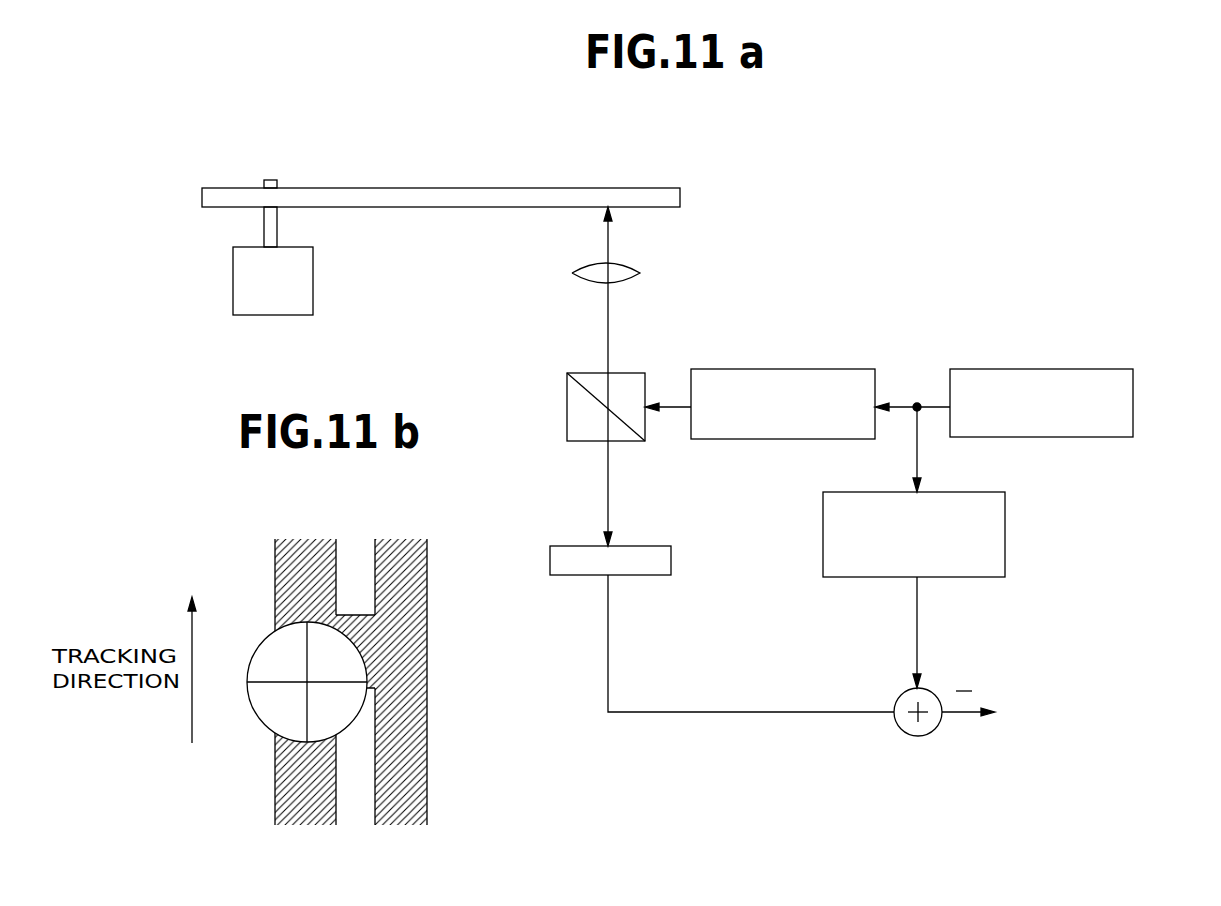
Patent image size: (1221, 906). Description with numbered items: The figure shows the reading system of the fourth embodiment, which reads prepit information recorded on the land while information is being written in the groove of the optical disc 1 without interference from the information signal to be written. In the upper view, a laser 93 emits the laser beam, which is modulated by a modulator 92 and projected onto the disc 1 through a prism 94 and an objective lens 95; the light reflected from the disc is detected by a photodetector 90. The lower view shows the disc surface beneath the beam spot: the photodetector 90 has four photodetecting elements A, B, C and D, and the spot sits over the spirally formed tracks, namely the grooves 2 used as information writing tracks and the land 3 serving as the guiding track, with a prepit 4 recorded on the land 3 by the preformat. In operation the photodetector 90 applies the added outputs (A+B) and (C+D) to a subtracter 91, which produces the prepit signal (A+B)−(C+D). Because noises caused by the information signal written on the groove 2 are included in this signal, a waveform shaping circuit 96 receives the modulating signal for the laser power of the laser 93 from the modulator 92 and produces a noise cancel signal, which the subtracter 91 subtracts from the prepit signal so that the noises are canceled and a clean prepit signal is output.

In FIG. 11a, the optical disc 1 is at (531, 195).
In FIG. 11b, the optical disc 1 is at (341, 680).
In FIG. 11b, the groove 2 is at (290, 552).
In FIG. 11b, the land 3 is at (360, 737).
In FIG. 11b, the prepit 4 is at (358, 632).
In FIG. 11a, the photodetector 90 is at (671, 558).
In FIG. 11b, the photodetector 90 is at (257, 718).
In FIG. 11a, the subtracter 91 is at (938, 729).
In FIG. 11a, the modulator 92 is at (1010, 370).
In FIG. 11a, the laser 93 is at (795, 377).
In FIG. 11a, the prism 94 is at (621, 376).
In FIG. 11a, the objective lens 95 is at (627, 268).
In FIG. 11a, the waveform shaping circuit 96 is at (1005, 522).